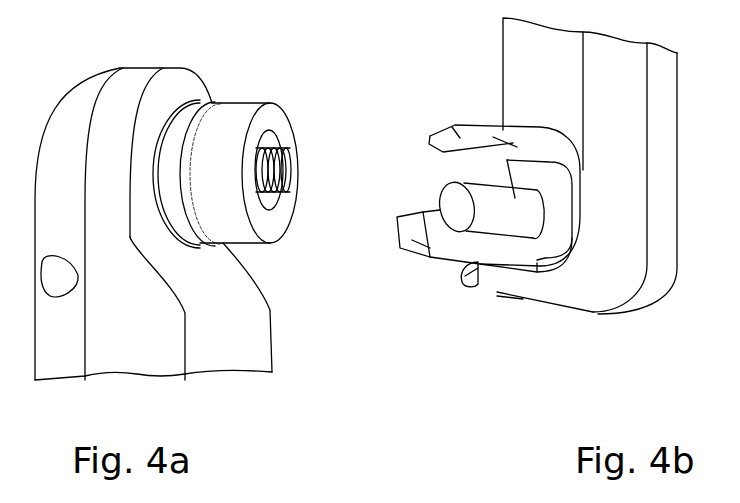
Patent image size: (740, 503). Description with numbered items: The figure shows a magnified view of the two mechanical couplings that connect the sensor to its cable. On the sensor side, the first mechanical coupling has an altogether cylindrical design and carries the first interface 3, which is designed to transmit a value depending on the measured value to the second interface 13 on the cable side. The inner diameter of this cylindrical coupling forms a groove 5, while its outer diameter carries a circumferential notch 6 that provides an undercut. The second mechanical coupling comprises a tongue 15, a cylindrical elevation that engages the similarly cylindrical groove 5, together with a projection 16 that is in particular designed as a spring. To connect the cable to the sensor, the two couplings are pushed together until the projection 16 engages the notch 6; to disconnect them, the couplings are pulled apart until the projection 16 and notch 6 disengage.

In FIG. 4A, the first interface 3 is at (302, 182).
In FIG. 4A, the groove 5 is at (263, 152).
In FIG. 4A, the circumferential notch 6 is at (183, 125).
In FIG. 4B, the second interface 13 is at (438, 200).
In FIG. 4B, the tongue 15 is at (458, 217).
In FIG. 4B, the projection 16 is at (477, 287).